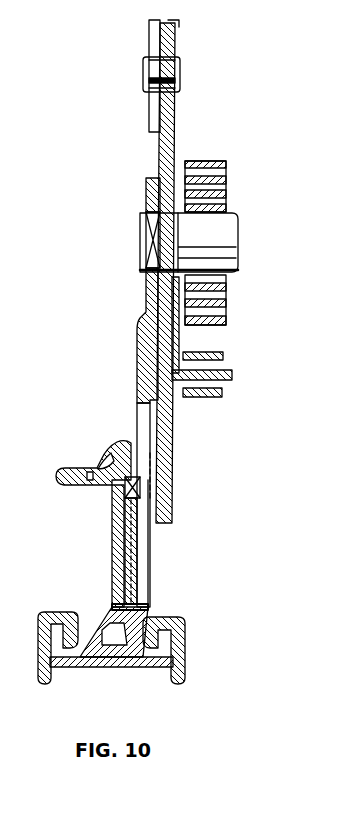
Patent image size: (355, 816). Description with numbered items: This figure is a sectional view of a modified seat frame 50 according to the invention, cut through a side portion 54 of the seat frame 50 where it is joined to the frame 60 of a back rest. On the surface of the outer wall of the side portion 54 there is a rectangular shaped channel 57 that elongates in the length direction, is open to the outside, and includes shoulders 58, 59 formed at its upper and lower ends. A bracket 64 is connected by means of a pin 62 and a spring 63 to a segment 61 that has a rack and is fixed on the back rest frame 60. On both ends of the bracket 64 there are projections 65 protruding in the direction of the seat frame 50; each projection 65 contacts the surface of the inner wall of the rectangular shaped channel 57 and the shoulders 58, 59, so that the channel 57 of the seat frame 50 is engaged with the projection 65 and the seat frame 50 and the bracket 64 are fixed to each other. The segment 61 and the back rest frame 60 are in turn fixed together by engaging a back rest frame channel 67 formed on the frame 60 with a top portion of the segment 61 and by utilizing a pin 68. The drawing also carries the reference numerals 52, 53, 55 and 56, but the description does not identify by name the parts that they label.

The seat frame 50 is at (62, 447).
The base rail 52 is at (184, 668).
The clip hooks 53 is at (181, 641).
The side portion 54 is at (123, 545).
The upper drive assembly 55 is at (247, 283).
The hook member 56 is at (139, 447).
The rectangular shaped channel 57 is at (138, 583).
The shoulder 58 is at (140, 488).
The shoulder 59 is at (148, 606).
The back rest frame 60 is at (150, 103).
The segment 61 is at (177, 117).
The pin 62 is at (223, 237).
The spring 63 is at (223, 163).
The bracket 64 is at (146, 280).
The projections 65 is at (148, 553).
The back rest frame channel 67 is at (168, 22).
The pin 68 is at (183, 70).